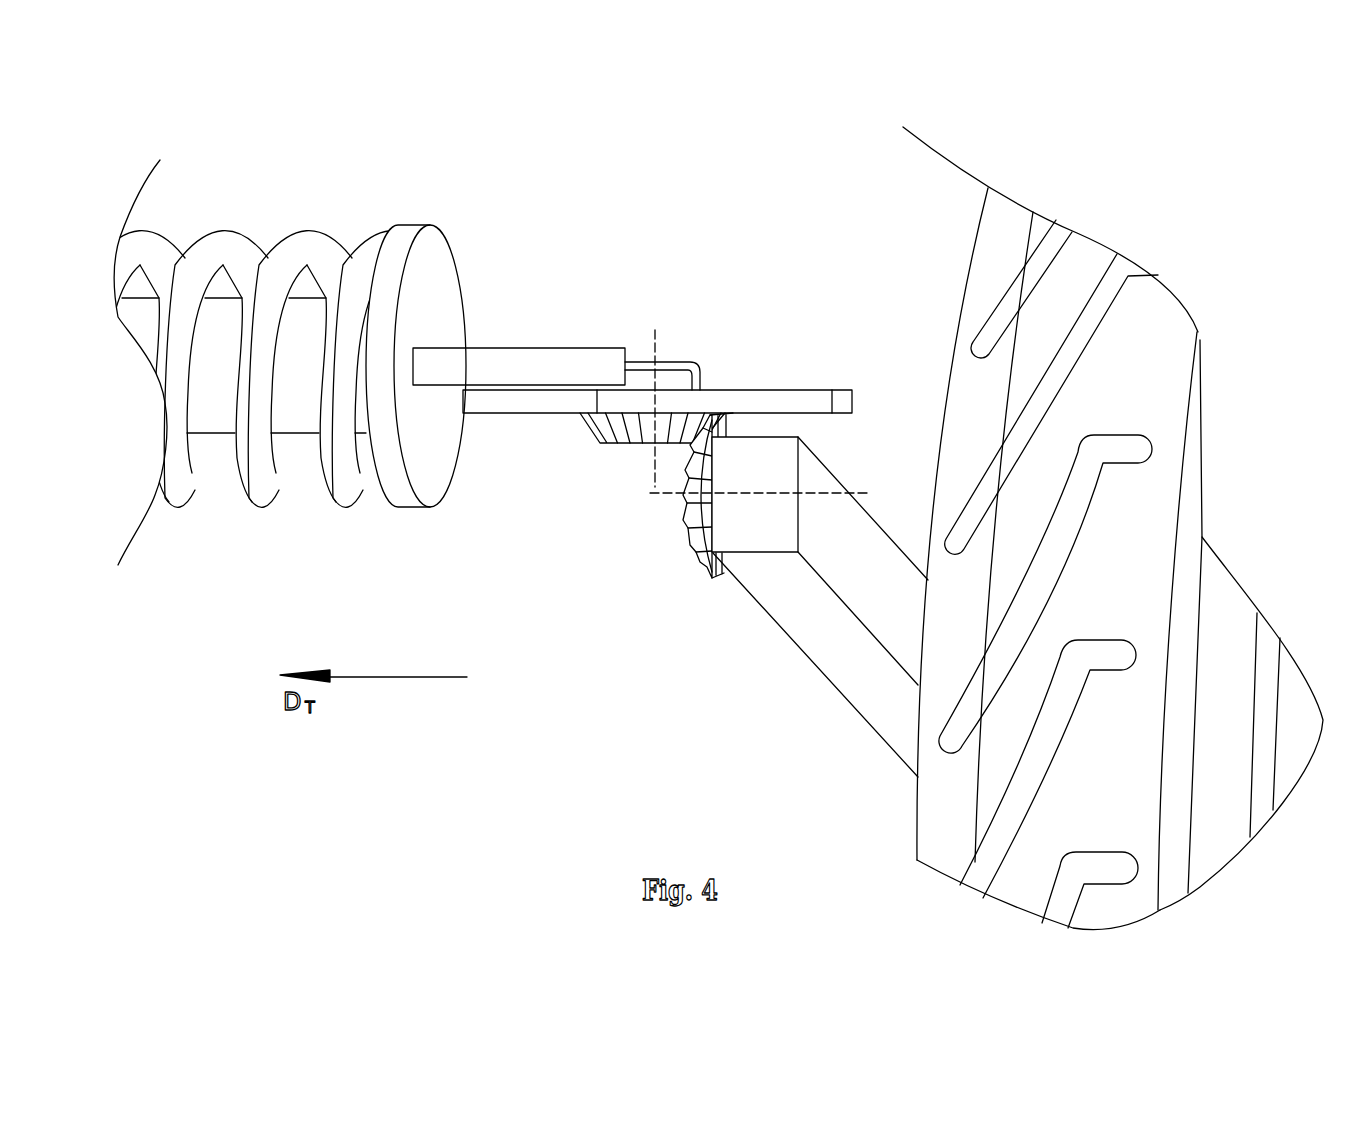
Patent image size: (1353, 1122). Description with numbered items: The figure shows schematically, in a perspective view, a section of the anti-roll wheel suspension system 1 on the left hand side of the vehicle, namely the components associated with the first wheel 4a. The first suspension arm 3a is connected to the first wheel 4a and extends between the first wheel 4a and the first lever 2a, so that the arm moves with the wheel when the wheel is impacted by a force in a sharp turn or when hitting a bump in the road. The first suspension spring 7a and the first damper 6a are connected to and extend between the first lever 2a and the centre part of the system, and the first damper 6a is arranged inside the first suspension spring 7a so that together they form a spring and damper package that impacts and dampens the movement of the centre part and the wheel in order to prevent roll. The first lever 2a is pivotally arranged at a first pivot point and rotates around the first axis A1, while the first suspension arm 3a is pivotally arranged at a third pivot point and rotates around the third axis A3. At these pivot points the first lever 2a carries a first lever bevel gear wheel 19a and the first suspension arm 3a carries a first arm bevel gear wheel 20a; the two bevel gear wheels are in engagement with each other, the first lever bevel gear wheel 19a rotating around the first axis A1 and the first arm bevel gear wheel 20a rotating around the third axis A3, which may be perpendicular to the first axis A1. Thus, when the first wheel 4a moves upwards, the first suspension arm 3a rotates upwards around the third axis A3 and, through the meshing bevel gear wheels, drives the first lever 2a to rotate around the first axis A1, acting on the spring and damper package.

The anti-roll wheel suspension system 1 is at (522, 171).
The first lever 2a is at (778, 402).
The first suspension arm 3a is at (828, 635).
The first wheel 4a is at (1000, 257).
The first damper 6a is at (305, 360).
The first suspension spring 7a is at (255, 445).
The first lever bevel gear wheel 19a is at (615, 445).
The first arm bevel gear wheel 20a is at (702, 575).
The first axis A1 is at (653, 352).
The third axis A3 is at (677, 492).